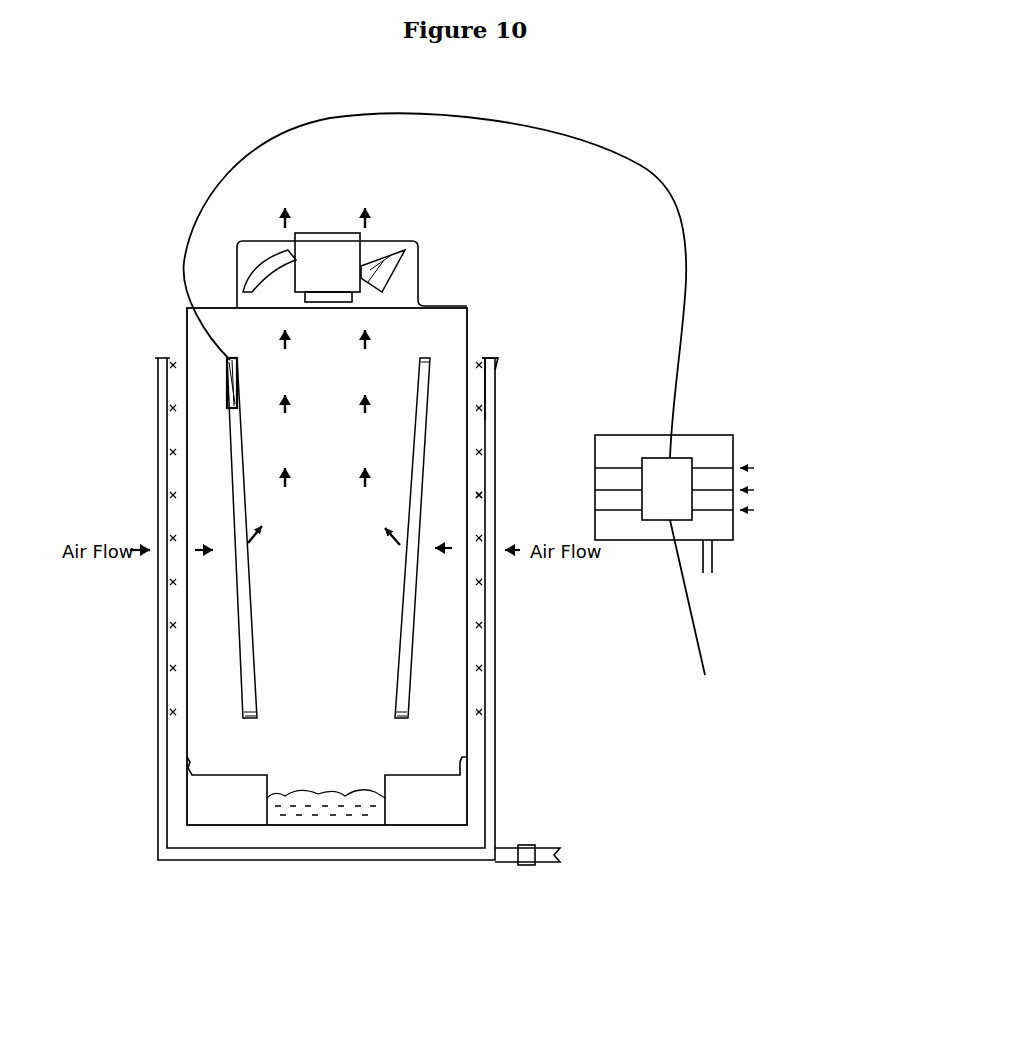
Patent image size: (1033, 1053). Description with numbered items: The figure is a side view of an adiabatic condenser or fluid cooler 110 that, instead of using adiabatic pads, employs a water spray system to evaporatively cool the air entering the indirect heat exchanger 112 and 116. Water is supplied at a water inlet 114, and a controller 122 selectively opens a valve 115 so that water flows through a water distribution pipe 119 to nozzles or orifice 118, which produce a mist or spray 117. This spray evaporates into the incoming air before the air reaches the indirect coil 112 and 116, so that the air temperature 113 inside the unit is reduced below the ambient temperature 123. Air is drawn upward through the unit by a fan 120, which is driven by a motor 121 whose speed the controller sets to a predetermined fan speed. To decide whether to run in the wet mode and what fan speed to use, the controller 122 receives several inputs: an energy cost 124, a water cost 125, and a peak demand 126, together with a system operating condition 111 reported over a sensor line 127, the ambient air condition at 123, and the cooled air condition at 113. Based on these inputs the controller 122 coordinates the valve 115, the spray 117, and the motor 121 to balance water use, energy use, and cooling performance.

The adiabatic condenser or fluid cooler 110 is at (170, 304).
The system operating condition 111 is at (228, 384).
The indirect heat exchanger 112 is at (230, 473).
The reduced air temperature 113 is at (215, 662).
The water inlet 114 is at (562, 855).
The valve 115 is at (525, 845).
The indirect heat exchanger 116 is at (415, 590).
The mist or spray 117 is at (478, 495).
The nozzles or orifice 118 is at (480, 408).
The water distribution pipe 119 is at (490, 360).
The fan 120 is at (376, 262).
The motor 121 is at (325, 253).
The controller 122 is at (707, 625).
The ambient air condition 123 is at (706, 573).
The energy cost input 124 is at (725, 510).
The water cost input 125 is at (718, 468).
The peak demand input 126 is at (852, 486).
The sensor cable 127 is at (685, 215).